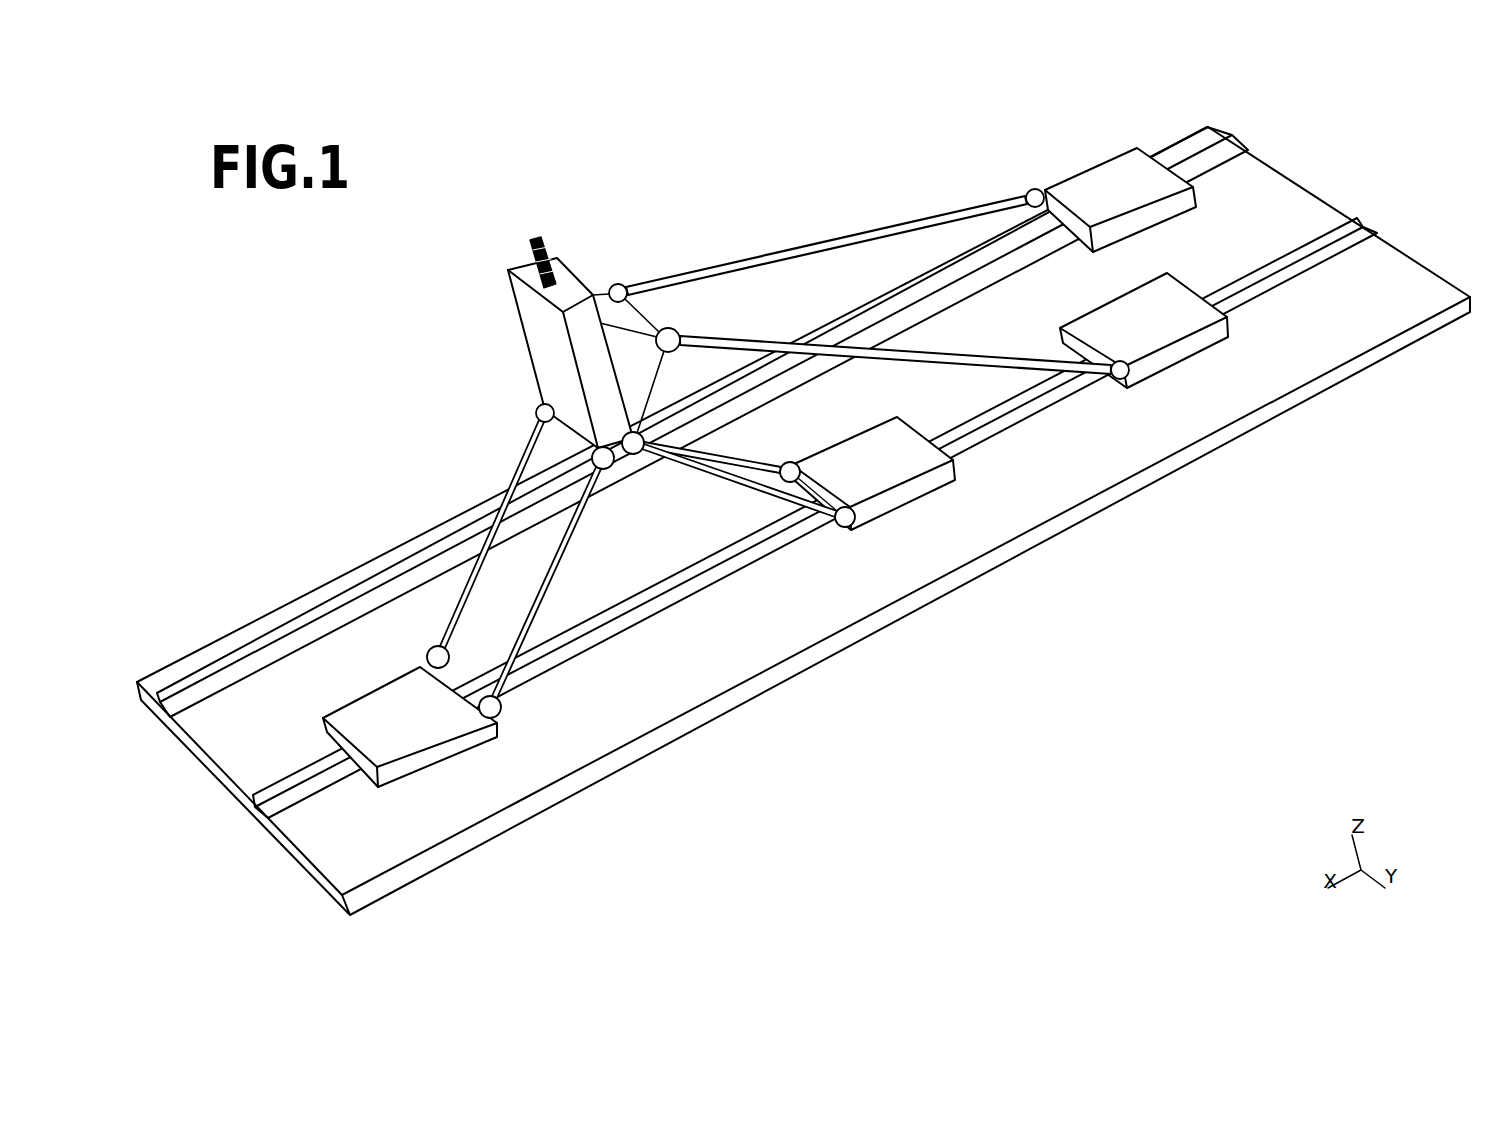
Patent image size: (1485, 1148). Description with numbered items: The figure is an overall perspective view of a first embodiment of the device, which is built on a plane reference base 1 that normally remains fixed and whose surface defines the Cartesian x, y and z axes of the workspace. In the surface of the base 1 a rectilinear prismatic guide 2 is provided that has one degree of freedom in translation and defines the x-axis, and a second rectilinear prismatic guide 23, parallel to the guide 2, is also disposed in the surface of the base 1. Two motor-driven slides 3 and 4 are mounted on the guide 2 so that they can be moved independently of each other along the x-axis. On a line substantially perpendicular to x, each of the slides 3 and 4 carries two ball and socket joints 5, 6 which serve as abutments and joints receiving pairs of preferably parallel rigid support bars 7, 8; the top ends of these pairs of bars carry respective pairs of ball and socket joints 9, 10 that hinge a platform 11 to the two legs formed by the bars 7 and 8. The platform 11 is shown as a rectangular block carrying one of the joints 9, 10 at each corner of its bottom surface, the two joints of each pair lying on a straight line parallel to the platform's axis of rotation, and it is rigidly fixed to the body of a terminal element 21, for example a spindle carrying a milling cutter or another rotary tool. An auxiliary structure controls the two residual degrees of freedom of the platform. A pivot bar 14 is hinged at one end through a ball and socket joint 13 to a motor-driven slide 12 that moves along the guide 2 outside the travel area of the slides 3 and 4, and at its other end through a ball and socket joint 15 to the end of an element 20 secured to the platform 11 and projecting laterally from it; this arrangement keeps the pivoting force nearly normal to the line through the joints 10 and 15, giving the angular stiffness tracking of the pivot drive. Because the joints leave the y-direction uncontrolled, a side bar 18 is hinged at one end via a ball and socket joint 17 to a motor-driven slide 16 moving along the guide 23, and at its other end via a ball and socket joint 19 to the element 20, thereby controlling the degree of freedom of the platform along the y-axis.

The reference base 1 is at (1333, 323).
The prismatic guide 2 is at (1363, 220).
The prismatic guide 23 is at (1235, 143).
The motor-driven slide 3 is at (440, 748).
The motor-driven slide 4 is at (907, 498).
The motor-driven slide 12 is at (1173, 357).
The motor-driven slide 16 is at (1120, 162).
The ball and socket joints 5 is at (430, 650).
The ball and socket joints 6 is at (790, 462).
The rigid support bars 7 is at (473, 583).
The rigid support bars 8 is at (728, 450).
The ball and socket joints 9 is at (538, 410).
The ball and socket joints 10 is at (638, 457).
The platform 11 is at (530, 335).
The ball and socket joint 13 is at (1115, 390).
The pivot bar 14 is at (945, 360).
The ball and socket joint 15 is at (677, 325).
The ball and socket joint 17 is at (1038, 187).
The side bar 18 is at (805, 248).
The ball and socket joint 19 is at (625, 285).
The element 20 is at (647, 375).
The terminal element 21 is at (547, 250).